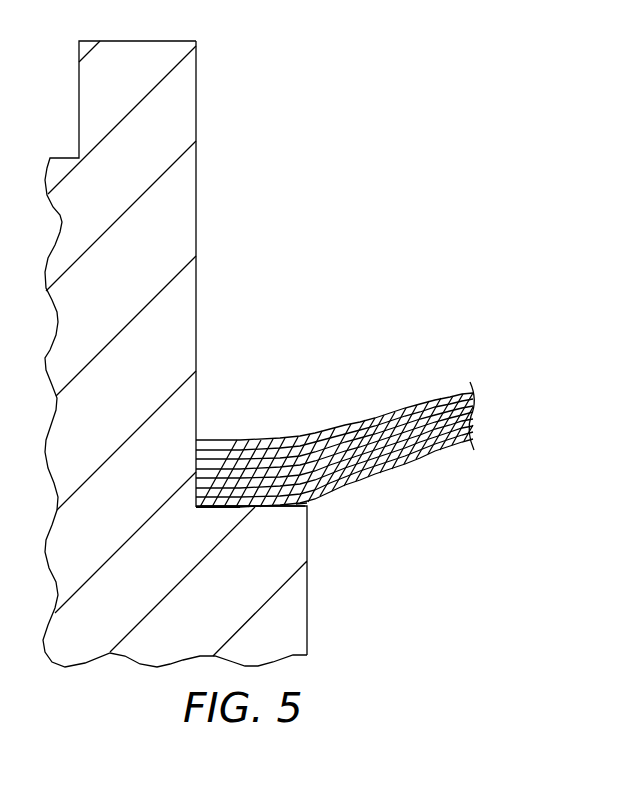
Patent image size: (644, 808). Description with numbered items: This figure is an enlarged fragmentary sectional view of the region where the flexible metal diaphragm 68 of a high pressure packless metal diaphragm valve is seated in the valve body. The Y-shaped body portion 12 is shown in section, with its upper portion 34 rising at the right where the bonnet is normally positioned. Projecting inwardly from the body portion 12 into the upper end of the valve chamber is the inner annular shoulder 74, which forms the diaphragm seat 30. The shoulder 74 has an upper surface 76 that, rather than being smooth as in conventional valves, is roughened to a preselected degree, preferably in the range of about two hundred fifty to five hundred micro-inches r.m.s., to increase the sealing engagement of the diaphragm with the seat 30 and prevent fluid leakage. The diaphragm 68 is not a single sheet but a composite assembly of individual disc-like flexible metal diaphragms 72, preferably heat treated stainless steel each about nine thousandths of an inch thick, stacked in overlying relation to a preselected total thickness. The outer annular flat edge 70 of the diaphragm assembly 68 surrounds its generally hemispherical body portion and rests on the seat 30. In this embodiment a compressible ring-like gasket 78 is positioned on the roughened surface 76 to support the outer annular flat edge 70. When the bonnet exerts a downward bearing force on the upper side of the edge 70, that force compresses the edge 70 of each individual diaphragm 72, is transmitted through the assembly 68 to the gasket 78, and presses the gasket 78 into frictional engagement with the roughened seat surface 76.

The Y-shaped body portion 12 is at (63, 219).
The diaphragm seat 30 is at (275, 540).
The upper portion 34 is at (191, 85).
The flexible metal diaphragm 68 is at (372, 373).
The outer annular flat edge 70 is at (213, 438).
The individual flexible metal diaphragms 72 is at (257, 445).
The inner annular shoulder 74 is at (308, 510).
The upper surface 76 is at (220, 510).
The compressible gasket 78 is at (307, 503).